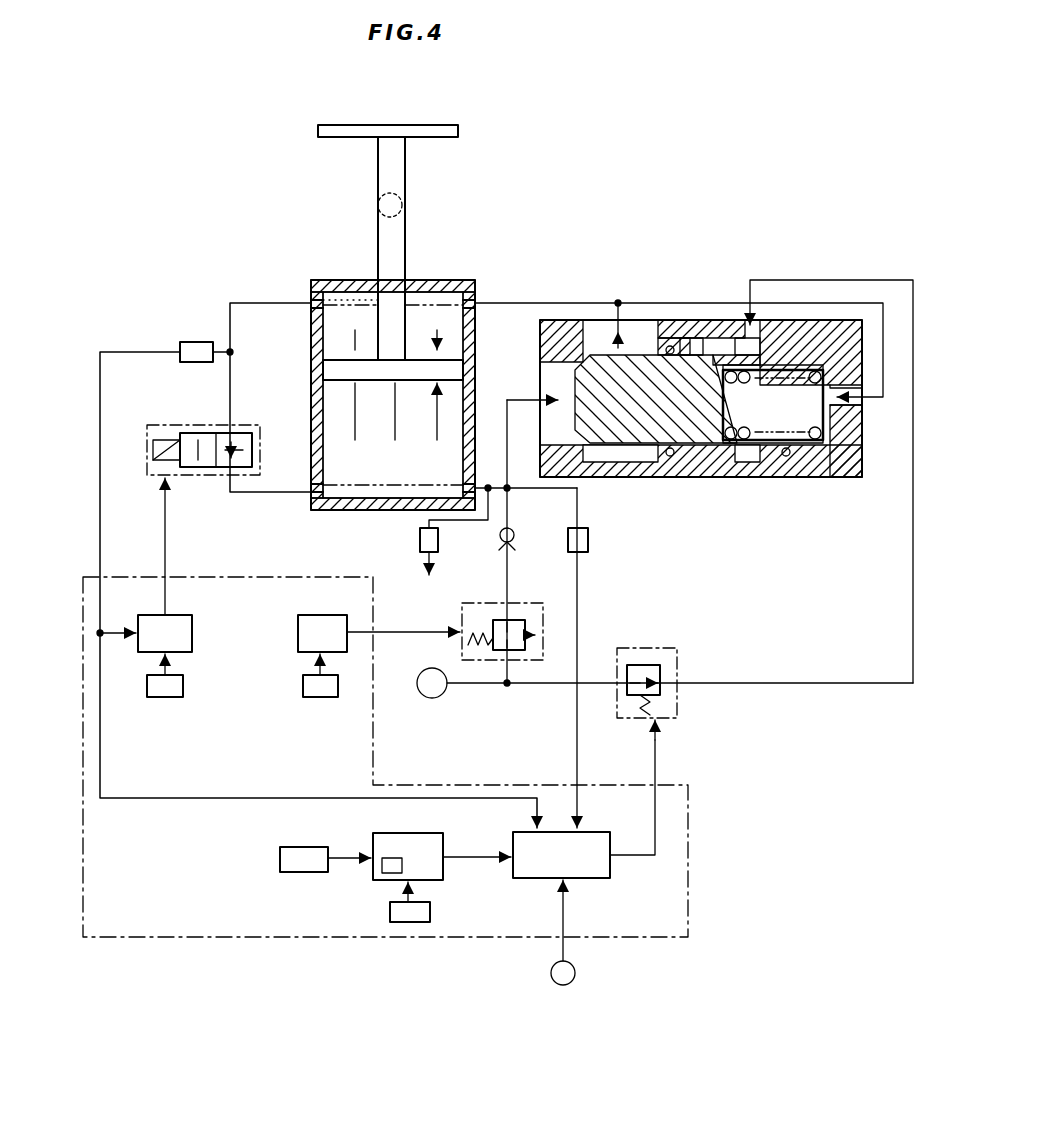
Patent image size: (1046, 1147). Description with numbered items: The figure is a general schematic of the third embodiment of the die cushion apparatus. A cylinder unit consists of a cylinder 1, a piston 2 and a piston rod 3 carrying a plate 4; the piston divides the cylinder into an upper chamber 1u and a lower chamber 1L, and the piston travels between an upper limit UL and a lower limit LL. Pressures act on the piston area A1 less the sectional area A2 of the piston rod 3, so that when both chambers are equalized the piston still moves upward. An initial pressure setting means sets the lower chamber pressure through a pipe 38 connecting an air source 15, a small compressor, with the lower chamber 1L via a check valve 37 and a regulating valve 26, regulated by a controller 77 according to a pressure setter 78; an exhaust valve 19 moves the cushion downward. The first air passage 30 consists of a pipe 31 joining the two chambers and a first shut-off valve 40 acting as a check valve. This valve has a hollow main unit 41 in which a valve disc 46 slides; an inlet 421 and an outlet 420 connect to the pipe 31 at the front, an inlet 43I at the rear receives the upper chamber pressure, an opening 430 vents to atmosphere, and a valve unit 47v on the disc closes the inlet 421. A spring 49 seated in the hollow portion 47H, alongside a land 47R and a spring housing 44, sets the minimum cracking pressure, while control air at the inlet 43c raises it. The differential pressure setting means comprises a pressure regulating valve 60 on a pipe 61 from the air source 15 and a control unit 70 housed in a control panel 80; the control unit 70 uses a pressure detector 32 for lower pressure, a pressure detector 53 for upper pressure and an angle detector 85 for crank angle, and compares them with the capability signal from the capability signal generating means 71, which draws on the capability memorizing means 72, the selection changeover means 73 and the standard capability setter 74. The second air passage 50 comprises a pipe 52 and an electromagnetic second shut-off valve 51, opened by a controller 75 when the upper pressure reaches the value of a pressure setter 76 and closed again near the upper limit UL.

The cylinder 1 is at (475, 282).
The upper chamber 1u is at (311, 320).
The lower chamber 1L is at (323, 438).
The piston 2 is at (323, 370).
The piston rod 3 is at (405, 182).
The load plate 4 is at (458, 131).
The piston area A1 is at (323, 398).
The sectional area of the piston rod A2 is at (378, 207).
The upper limit UL is at (336, 290).
The lower limit LL is at (345, 510).
The air source 15 is at (432, 698).
The exhaust valve 19 is at (420, 540).
The solenoid valve 26 is at (470, 628).
The first air passage 30 is at (520, 283).
The pipe 31 is at (507, 398).
The pressure detector 32 is at (568, 535).
The check valve 37 is at (500, 548).
The pipe 38 is at (507, 600).
The first shut-off valve 40 is at (684, 372).
The main unit 41 is at (785, 325).
The inlet 421 is at (555, 372).
The outlet 420 is at (640, 335).
The atmospheric opening 430 is at (700, 330).
The inlet 43c is at (735, 325).
The inlet 43I is at (845, 445).
The spring housing 44 is at (810, 443).
The valve disc 46 is at (650, 430).
The valve unit 47v is at (615, 462).
The spool land 47R is at (705, 443).
The hollow portion 47H is at (750, 443).
The spring 49 is at (765, 430).
The second air passage 50 is at (132, 328).
The second shut-off valve 51 is at (210, 467).
The pipe 52 is at (230, 390).
The pressure detector 53 is at (200, 342).
The pressure regulating valve 60 is at (665, 672).
The pipe 61 is at (785, 683).
The control unit 70 is at (513, 840).
The capability signal generating means 71 is at (385, 835).
The capability memorizing means 72 is at (382, 870).
The selection changeover means 73 is at (280, 860).
The standard capability setter 74 is at (430, 912).
The controller 75 is at (192, 625).
The pressure setter 76 is at (165, 697).
The controller 77 is at (315, 620).
The pressure setter 78 is at (303, 685).
The control panel 80 is at (416, 757).
The angle detector 85 is at (575, 972).